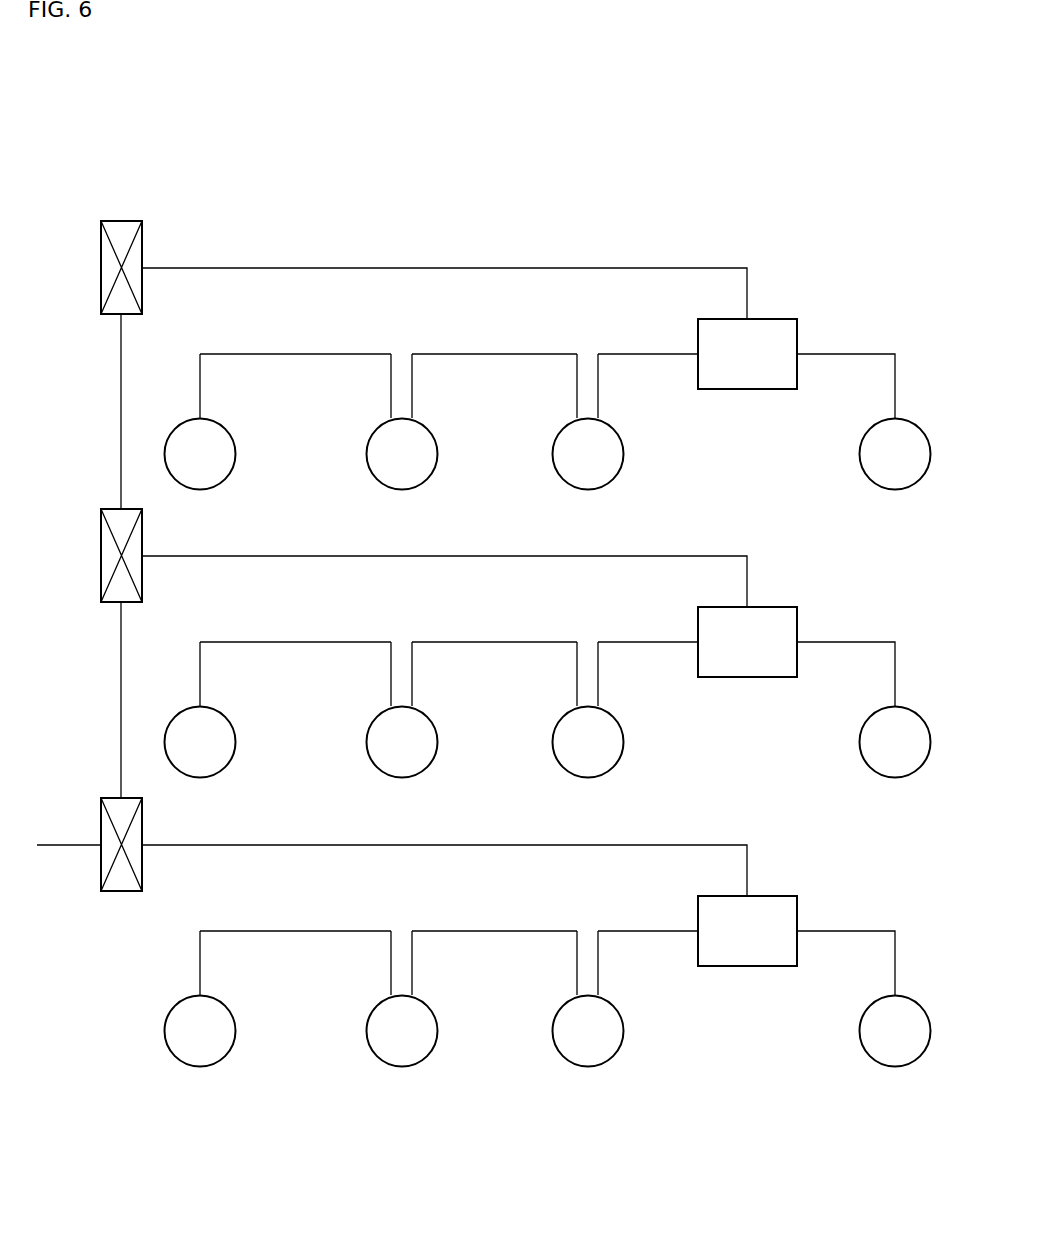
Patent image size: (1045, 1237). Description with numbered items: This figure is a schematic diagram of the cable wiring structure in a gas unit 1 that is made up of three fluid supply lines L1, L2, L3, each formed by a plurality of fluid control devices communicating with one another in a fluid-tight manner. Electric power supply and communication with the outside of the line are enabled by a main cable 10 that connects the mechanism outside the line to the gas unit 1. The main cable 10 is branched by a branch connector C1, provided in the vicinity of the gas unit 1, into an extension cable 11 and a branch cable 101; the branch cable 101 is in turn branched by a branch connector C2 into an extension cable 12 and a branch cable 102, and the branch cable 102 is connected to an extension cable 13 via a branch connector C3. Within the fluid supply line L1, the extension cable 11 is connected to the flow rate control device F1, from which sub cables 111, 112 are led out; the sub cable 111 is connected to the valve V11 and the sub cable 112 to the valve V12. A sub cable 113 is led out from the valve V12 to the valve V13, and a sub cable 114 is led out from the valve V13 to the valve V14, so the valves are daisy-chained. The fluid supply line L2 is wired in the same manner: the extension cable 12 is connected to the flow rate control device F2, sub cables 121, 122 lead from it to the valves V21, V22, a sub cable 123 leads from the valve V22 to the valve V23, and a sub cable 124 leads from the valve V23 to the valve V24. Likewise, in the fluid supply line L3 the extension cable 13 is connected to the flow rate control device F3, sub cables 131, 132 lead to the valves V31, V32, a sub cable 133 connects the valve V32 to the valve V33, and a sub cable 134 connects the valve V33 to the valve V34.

The gas unit 1 is at (148, 182).
The main cable 10 is at (60, 846).
The extension cable 11 is at (677, 845).
The extension cable 12 is at (663, 556).
The extension cable 13 is at (647, 268).
The branch cable 101 is at (135, 647).
The branch cable 102 is at (135, 358).
The sub cable 111 is at (845, 931).
The sub cable 112 is at (643, 931).
The sub cable 113 is at (493, 931).
The sub cable 114 is at (263, 931).
The sub cable 121 is at (845, 642).
The sub cable 122 is at (643, 642).
The sub cable 123 is at (493, 642).
The sub cable 124 is at (263, 642).
The sub cable 131 is at (845, 354).
The sub cable 132 is at (643, 354).
The sub cable 133 is at (493, 354).
The sub cable 134 is at (263, 354).
The branch connector C1 is at (142, 824).
The branch connector C2 is at (142, 535).
The branch connector C3 is at (142, 247).
The flow rate control device F1 is at (760, 942).
The flow rate control device F2 is at (760, 653).
The flow rate control device F3 is at (760, 365).
The fluid supply line L1 is at (862, 845).
The fluid supply line L2 is at (862, 555).
The fluid supply line L3 is at (862, 268).
The valve V11 is at (915, 1043).
The valve V12 is at (608, 1043).
The valve V13 is at (422, 1043).
The valve V14 is at (220, 1043).
The valve V21 is at (915, 754).
The valve V22 is at (608, 754).
The valve V23 is at (422, 754).
The valve V24 is at (220, 754).
The valve V31 is at (915, 466).
The valve V32 is at (608, 466).
The valve V33 is at (422, 466).
The valve V34 is at (220, 466).